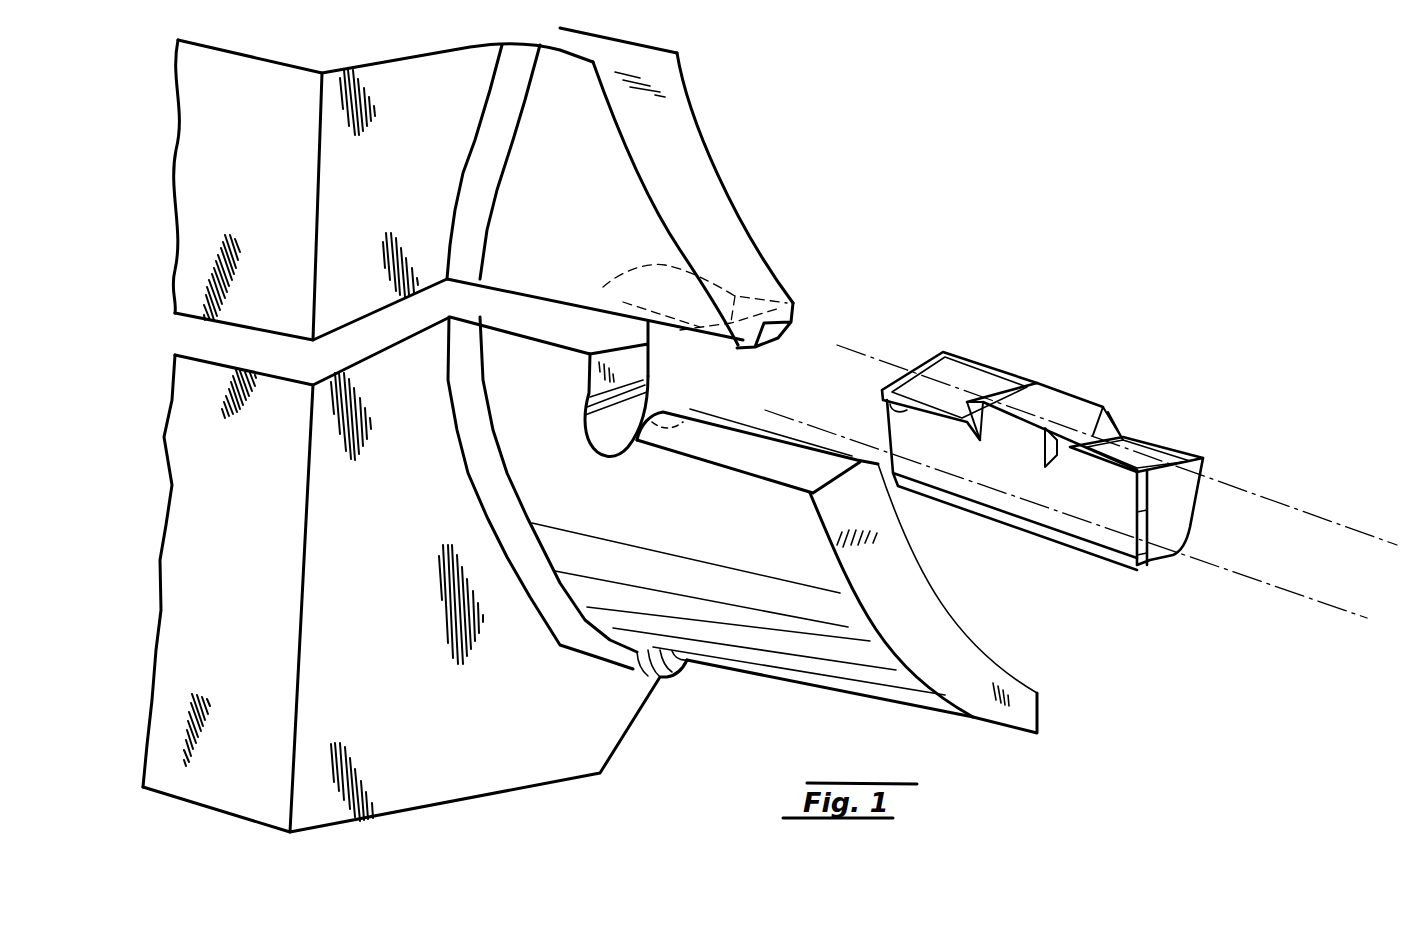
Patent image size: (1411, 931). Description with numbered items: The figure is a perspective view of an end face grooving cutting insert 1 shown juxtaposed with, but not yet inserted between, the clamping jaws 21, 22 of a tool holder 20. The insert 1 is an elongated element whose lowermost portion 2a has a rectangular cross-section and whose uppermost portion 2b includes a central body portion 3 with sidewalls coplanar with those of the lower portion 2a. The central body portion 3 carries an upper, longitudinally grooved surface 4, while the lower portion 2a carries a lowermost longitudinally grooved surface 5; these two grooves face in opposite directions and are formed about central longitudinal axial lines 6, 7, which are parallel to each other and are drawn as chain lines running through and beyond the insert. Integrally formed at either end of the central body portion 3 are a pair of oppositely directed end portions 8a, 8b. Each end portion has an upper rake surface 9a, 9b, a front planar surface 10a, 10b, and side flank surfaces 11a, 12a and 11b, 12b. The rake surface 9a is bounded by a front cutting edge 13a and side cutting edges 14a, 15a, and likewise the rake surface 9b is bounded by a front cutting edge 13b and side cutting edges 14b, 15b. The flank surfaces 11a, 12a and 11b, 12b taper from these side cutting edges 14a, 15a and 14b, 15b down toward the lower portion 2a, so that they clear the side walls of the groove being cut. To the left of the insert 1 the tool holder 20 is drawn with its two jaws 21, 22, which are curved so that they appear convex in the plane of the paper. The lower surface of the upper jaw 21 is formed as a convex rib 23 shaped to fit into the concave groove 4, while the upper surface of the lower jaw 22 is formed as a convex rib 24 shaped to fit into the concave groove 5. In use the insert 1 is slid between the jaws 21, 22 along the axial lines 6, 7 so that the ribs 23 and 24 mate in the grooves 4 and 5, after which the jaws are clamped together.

The cutting insert 1 is at (1103, 372).
The lowermost portion 2a is at (1047, 482).
The uppermost portion 2b is at (1000, 449).
The central body portion 3 is at (1023, 447).
The upper longitudinally grooved surface 4 is at (1089, 393).
The lowermost longitudinally grooved surface 5 is at (1170, 550).
The central longitudinal axial line 6 is at (1363, 527).
The central longitudinal axial line 7 is at (1330, 607).
The end portion 8a is at (973, 349).
The end portion 8b is at (1179, 441).
The upper rake surface 9a is at (927, 387).
The upper rake surface 9b is at (1171, 463).
The front planar surface 10a is at (887, 438).
The front planar surface 10b is at (1170, 503).
The side flank surface 11a is at (930, 428).
The side flank surface 11b is at (1124, 490).
The side flank surface 12a is at (993, 367).
The side flank surface 12b is at (1187, 453).
The front cutting edge 13a is at (910, 373).
The front cutting edge 13b is at (1167, 468).
The side cutting edge 14a is at (887, 403).
The side cutting edge 14b is at (1103, 463).
The side cutting edge 15a is at (973, 360).
The side cutting edge 15b is at (1143, 447).
The tool holder 20 is at (200, 224).
The jaw 21 is at (693, 150).
The jaw 22 is at (917, 635).
The convex rib 23 is at (780, 331).
The convex rib 24 is at (753, 437).